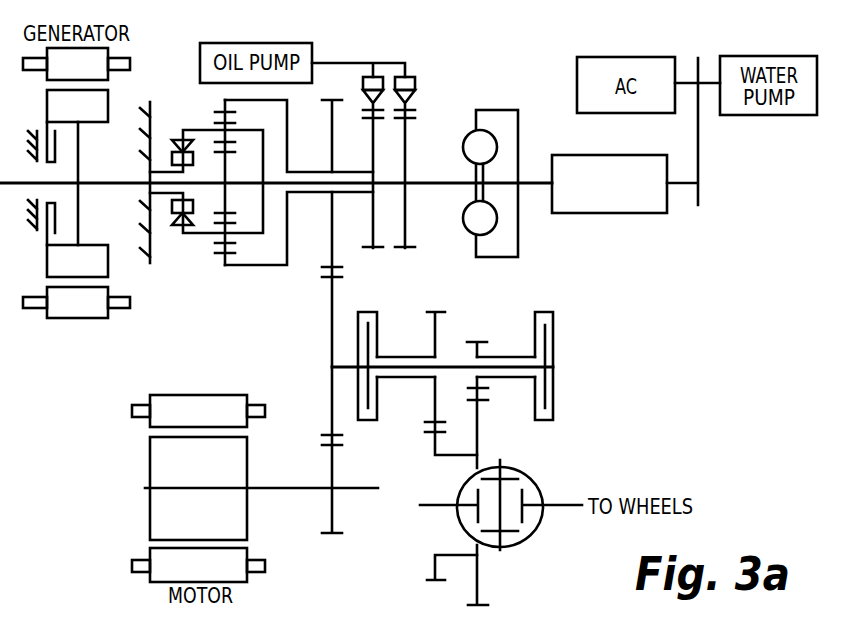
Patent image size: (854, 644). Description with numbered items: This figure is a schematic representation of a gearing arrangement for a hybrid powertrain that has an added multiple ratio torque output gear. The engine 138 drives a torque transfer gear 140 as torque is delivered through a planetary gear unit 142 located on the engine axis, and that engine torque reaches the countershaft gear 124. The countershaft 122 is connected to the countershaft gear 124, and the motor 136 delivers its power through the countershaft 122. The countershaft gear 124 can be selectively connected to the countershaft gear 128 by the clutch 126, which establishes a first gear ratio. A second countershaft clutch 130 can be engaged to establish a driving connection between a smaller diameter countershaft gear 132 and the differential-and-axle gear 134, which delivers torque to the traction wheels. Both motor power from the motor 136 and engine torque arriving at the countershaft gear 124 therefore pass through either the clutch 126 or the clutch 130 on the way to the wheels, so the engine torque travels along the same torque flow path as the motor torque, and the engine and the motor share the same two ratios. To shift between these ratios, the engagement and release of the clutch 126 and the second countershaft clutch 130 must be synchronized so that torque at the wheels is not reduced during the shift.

The countershaft 122 is at (455, 362).
The countershaft gear 124 is at (332, 322).
The clutch 126 is at (367, 312).
The countershaft gear 128 is at (432, 405).
The second countershaft clutch 130 is at (548, 400).
The smaller diameter countershaft gear 132 is at (480, 342).
The differential-and-axle gear 134 is at (478, 442).
The motor 136 is at (162, 512).
The engine 138 is at (637, 213).
The torque transfer gear 140 is at (330, 240).
The planetary gear unit 142 is at (213, 126).